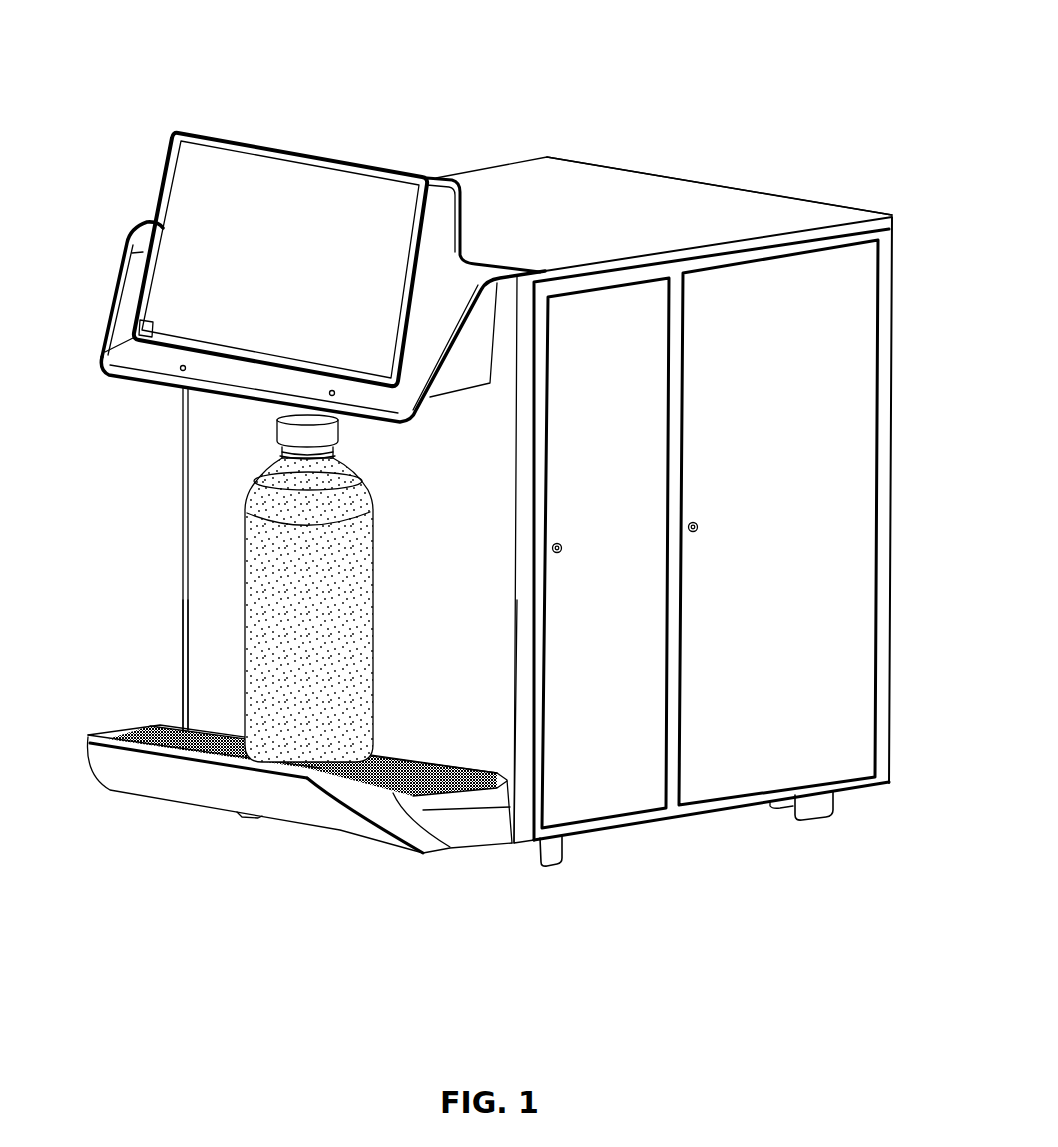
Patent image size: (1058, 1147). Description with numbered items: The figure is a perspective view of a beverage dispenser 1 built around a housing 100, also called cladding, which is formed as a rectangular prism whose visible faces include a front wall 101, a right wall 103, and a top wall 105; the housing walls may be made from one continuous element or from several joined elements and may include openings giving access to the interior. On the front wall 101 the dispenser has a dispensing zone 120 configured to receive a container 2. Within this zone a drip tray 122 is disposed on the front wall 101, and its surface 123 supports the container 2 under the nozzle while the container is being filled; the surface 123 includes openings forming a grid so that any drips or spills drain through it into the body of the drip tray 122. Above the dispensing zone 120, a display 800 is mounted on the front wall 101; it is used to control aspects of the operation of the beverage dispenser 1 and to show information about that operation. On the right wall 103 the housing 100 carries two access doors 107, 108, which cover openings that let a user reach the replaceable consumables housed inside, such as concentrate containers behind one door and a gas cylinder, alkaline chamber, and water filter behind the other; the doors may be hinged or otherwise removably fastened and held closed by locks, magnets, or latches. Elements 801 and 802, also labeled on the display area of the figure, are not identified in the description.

The beverage dispenser 1 is at (851, 65).
The container 2 is at (375, 500).
The housing 100 is at (892, 398).
The front wall 101 is at (497, 697).
The right wall 103 is at (669, 806).
The top wall 105 is at (613, 183).
The access door 107 is at (612, 800).
The access door 108 is at (850, 753).
The dispensing zone 120 is at (235, 527).
The drip tray 122 is at (347, 820).
The surface 123 is at (170, 732).
The display 800 is at (208, 133).
The display housing 801 is at (170, 213).
The sensor 802 is at (140, 319).